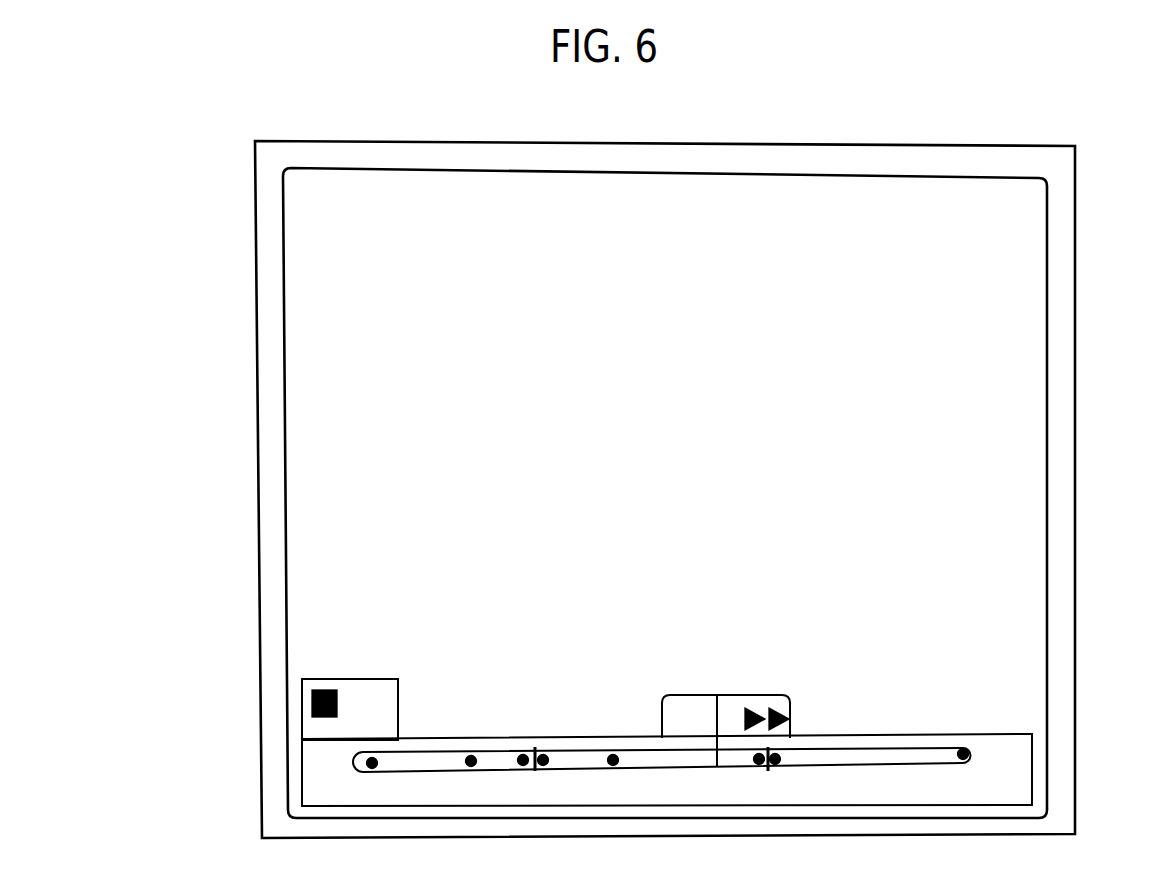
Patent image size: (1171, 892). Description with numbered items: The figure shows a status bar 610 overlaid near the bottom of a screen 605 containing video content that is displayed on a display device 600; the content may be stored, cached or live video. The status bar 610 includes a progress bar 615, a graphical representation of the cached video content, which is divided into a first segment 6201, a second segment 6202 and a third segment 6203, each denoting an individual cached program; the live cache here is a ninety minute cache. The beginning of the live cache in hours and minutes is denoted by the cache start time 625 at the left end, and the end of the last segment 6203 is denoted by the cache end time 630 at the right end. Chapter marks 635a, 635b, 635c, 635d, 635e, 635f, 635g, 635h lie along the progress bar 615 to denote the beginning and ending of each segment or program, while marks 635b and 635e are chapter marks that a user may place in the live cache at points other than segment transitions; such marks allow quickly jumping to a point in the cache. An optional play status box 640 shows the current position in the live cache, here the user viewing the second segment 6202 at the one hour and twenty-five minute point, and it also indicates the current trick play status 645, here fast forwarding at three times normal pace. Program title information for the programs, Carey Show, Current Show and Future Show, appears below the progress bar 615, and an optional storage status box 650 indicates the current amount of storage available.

The display device 600 is at (258, 140).
The screen 605 is at (297, 205).
The status bar 610 is at (302, 797).
The progress bar 615 is at (367, 768).
The first segment 6201 is at (437, 760).
The second segment 6202 is at (588, 757).
The third segment 6203 is at (837, 750).
The cache start time 625 is at (312, 747).
The cache end time 630 is at (1026, 742).
The chapter mark 635a is at (368, 756).
The chapter mark 635b is at (466, 756).
The chapter mark 635c is at (518, 756).
The chapter mark 635d is at (550, 750).
The chapter mark 635e is at (613, 755).
The chapter mark 635f is at (753, 765).
The chapter mark 635g is at (800, 750).
The chapter mark 635h is at (950, 758).
The play status box 640 is at (676, 696).
The trick play status 645 is at (745, 698).
The storage status box 650 is at (335, 680).